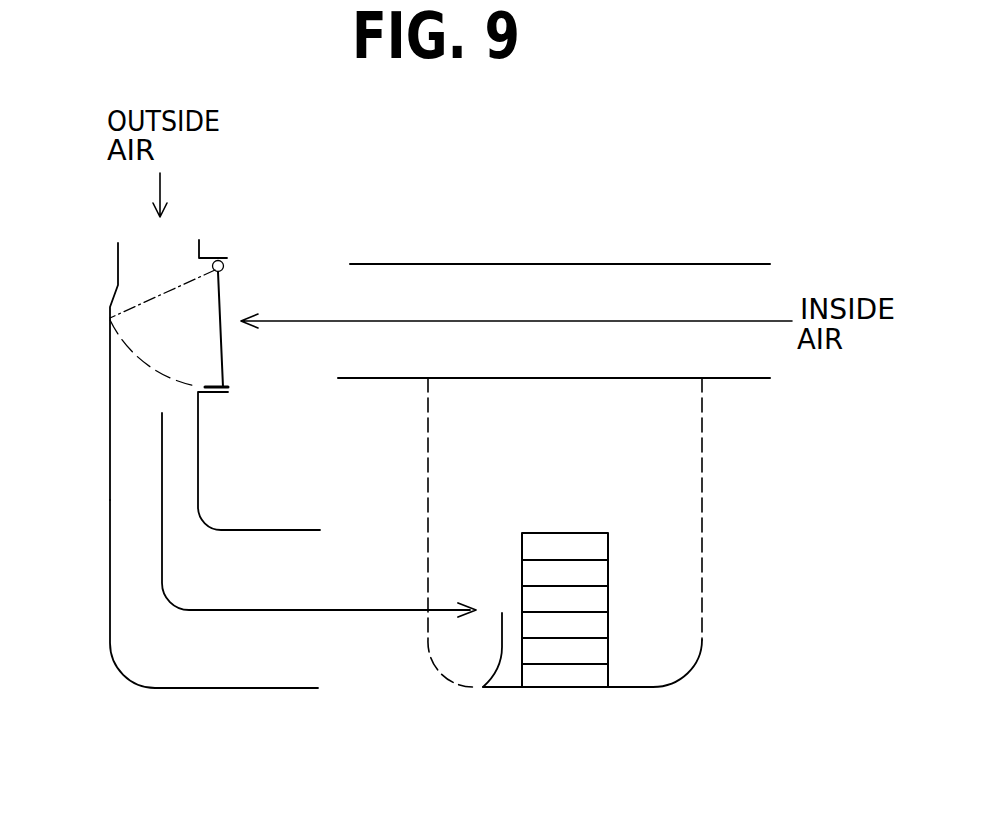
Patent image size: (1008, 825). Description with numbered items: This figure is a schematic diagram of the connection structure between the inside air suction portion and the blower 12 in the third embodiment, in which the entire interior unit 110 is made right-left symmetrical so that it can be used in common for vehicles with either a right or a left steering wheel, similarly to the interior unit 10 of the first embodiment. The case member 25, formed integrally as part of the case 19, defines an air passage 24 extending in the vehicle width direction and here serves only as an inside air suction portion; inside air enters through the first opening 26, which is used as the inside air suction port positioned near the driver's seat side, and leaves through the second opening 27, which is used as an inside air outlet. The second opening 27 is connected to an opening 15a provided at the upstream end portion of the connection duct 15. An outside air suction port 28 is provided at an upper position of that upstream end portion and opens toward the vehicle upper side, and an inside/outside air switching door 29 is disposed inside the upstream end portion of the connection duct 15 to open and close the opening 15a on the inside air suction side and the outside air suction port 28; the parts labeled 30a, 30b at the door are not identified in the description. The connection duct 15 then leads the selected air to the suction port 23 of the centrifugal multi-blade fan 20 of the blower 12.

The interior unit 10 is at (706, 618).
The blower 12 is at (620, 667).
The connection duct 15 is at (213, 690).
The opening 15a is at (232, 347).
The case 19 is at (702, 562).
The centrifugal multi-blades fan 20 is at (558, 653).
The suction port 23 is at (483, 687).
The air passage 24 is at (468, 303).
The case member 25 is at (632, 263).
The first opening 26 is at (755, 292).
The second opening 27 is at (365, 302).
The outside air suction port 28 is at (137, 253).
The inside/outside air switching door 29 is at (225, 302).
The door pivot shaft 30a is at (220, 260).
The door pivot shaft 30b is at (220, 260).
The interior unit 110 is at (551, 258).